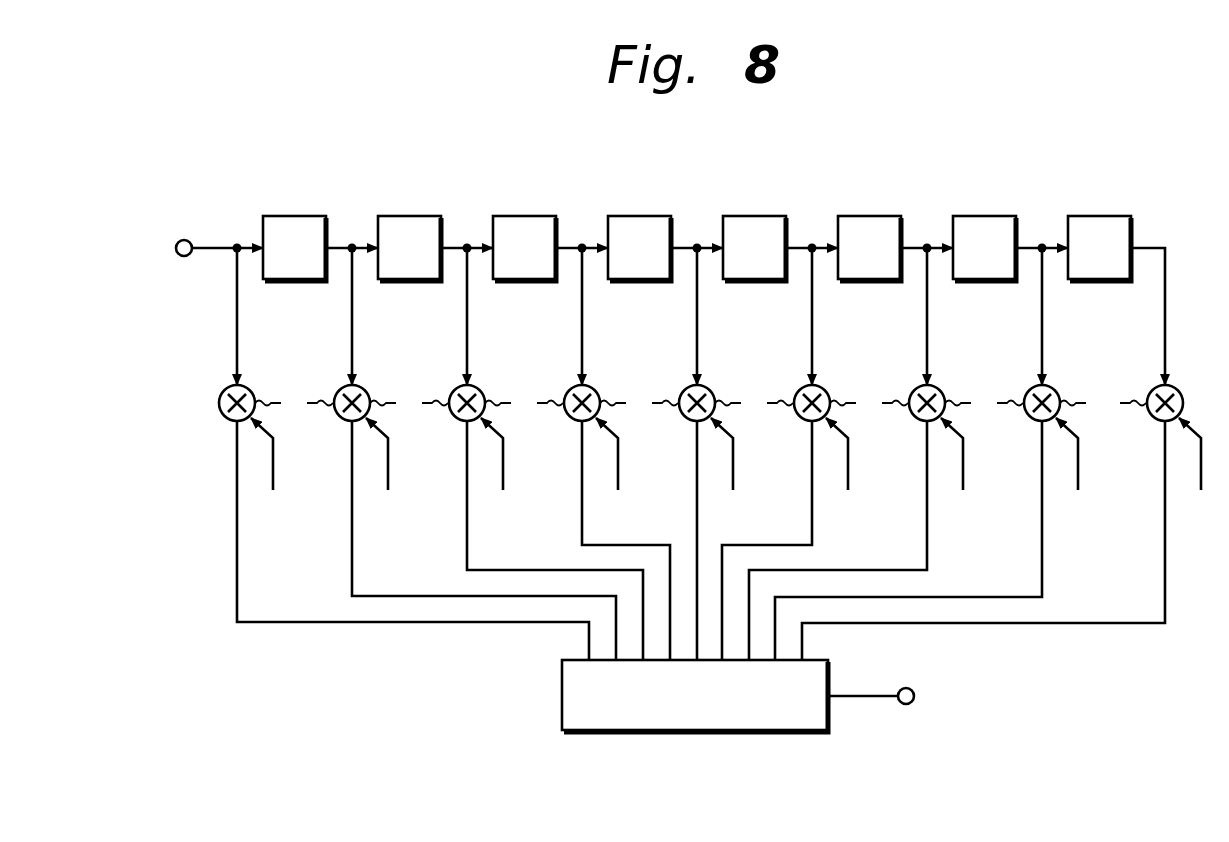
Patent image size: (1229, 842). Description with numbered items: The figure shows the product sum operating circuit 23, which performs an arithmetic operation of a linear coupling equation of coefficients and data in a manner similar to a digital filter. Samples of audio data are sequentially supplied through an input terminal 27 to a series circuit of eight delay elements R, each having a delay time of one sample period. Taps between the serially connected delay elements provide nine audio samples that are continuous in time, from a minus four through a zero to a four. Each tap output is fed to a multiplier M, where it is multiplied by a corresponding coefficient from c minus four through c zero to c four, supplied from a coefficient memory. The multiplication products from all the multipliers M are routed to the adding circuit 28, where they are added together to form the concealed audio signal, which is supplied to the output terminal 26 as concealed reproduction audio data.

The product sum operating circuit 23 is at (710, 165).
The input terminal 27 is at (187, 240).
The adding circuit 28 is at (562, 695).
The output terminal 26 is at (914, 696).